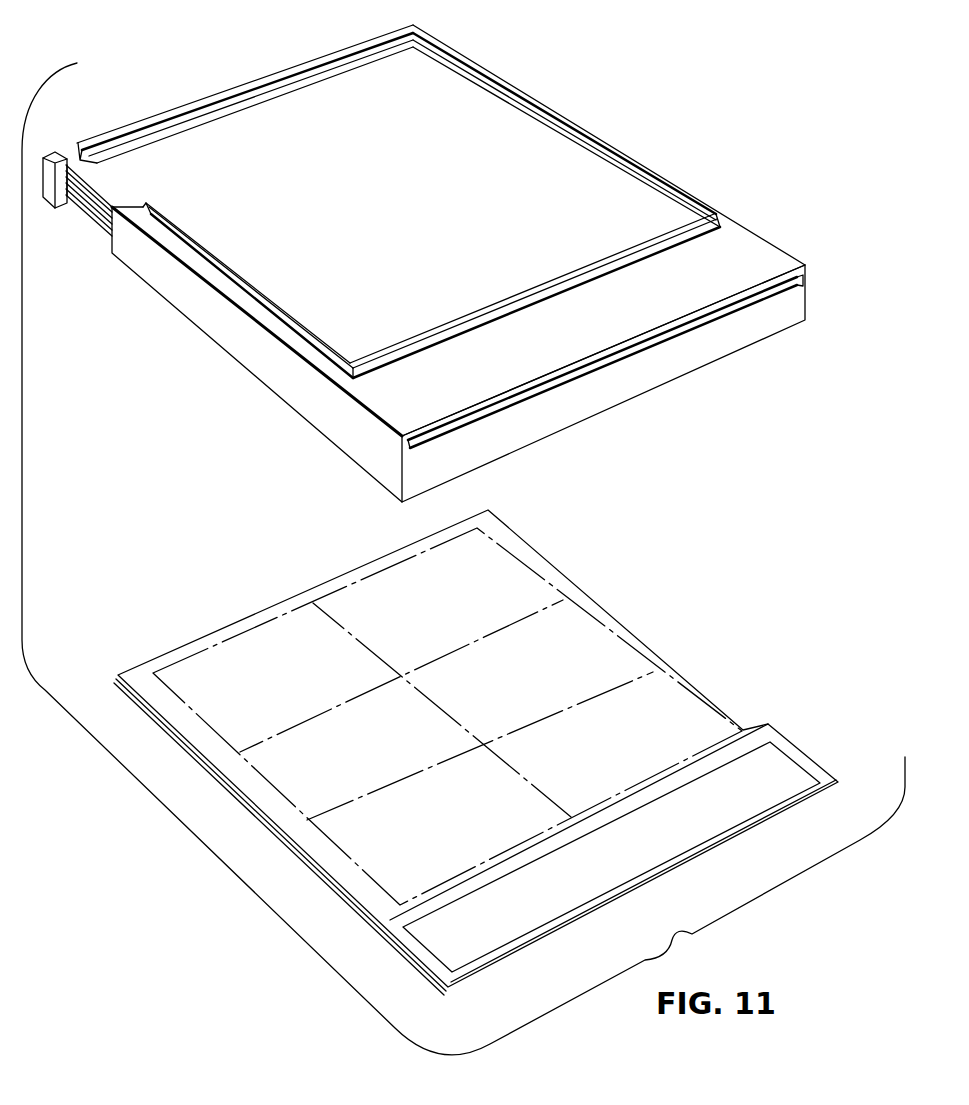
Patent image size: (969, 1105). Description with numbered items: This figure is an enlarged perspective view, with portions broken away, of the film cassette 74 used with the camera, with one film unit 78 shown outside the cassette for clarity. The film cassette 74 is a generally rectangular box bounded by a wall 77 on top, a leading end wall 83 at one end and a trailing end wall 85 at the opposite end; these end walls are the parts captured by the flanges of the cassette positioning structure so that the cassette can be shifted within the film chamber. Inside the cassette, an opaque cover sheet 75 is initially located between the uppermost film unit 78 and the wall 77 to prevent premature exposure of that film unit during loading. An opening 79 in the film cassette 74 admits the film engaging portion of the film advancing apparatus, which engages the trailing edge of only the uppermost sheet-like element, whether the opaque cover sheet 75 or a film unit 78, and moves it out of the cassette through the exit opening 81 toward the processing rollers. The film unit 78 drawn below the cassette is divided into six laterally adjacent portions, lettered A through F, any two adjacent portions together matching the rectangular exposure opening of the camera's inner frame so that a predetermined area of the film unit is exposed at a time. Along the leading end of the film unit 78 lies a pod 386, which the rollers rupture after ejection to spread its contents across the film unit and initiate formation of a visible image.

The film cassette 74 is at (650, 78).
The opaque cover sheet 75 is at (352, 197).
The wall of the film cassette 77 is at (567, 338).
The opening in the film cassette 79 is at (65, 152).
The exit opening 81 is at (718, 313).
The leading end wall 83 is at (590, 399).
The trailing end wall 85 is at (258, 80).
The film unit 78 is at (747, 582).
The pod 386 is at (658, 851).